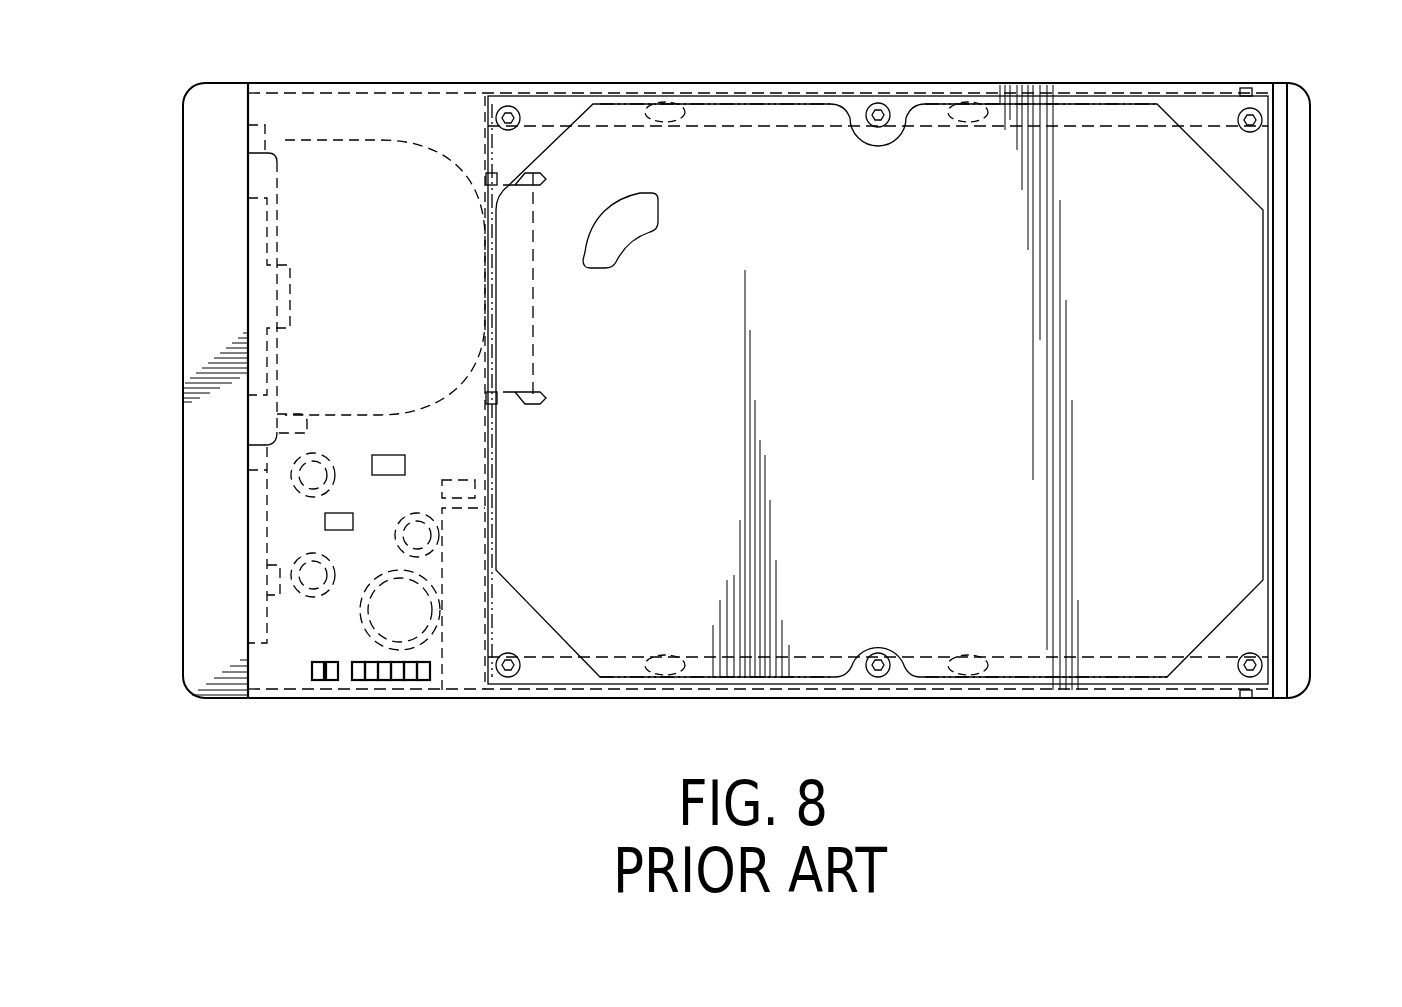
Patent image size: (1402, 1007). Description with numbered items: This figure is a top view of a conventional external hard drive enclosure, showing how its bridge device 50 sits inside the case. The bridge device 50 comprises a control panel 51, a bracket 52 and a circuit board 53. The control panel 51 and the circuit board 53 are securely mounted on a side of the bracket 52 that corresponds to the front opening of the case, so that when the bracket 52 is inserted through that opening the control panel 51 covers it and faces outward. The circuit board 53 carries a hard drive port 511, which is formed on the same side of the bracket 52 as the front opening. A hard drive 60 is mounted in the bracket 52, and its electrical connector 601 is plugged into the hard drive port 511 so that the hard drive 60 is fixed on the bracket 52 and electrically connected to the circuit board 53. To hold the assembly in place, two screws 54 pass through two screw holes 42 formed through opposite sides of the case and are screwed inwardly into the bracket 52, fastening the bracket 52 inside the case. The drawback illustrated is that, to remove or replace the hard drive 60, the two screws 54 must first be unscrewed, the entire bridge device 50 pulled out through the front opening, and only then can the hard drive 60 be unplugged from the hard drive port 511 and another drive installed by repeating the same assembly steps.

The bridge device 50 is at (232, 72).
The control panel 51 is at (203, 300).
The circuit board 53 is at (380, 105).
The hard drive port 511 is at (503, 178).
The bracket 52 is at (1125, 95).
The screws 54 is at (1248, 89).
The electrical connector 601 is at (524, 333).
The hard drive 60 is at (1222, 350).
The screw holes 42 is at (1256, 698).